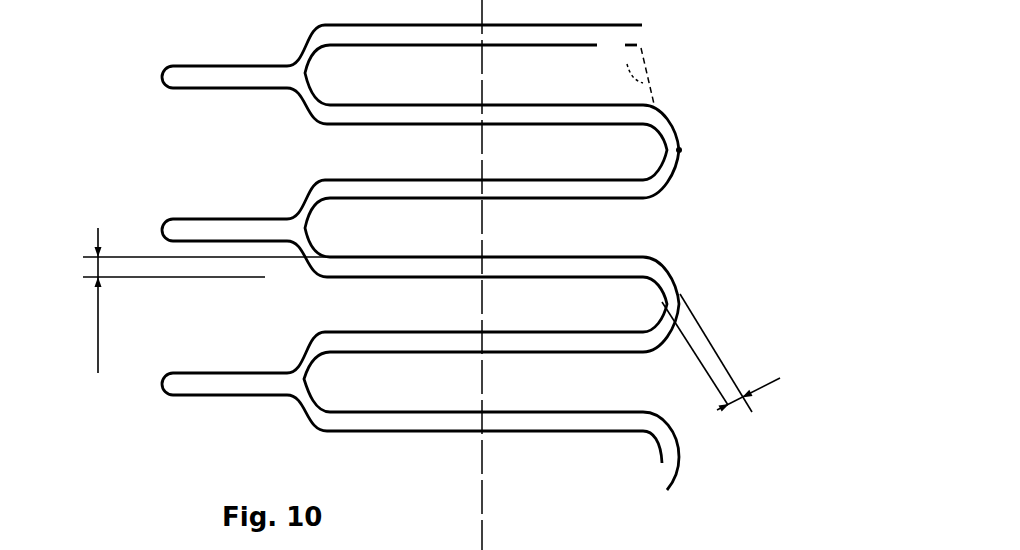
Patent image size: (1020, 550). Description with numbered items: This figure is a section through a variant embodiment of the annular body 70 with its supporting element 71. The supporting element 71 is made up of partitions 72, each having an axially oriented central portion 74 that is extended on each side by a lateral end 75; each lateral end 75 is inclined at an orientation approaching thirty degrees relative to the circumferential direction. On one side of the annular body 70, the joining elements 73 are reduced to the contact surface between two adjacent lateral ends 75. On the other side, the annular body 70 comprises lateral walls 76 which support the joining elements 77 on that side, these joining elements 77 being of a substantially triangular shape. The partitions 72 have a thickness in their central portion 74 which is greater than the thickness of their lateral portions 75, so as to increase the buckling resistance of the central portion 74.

The annular body 70 is at (153, 148).
The supporting element 71 is at (678, 100).
The partition 72 is at (540, 202).
The joining element 73 is at (680, 151).
The central portion 74 is at (428, 182).
The lateral end 75 is at (306, 346).
The lateral wall 76 is at (230, 381).
The joining element 77 is at (296, 377).